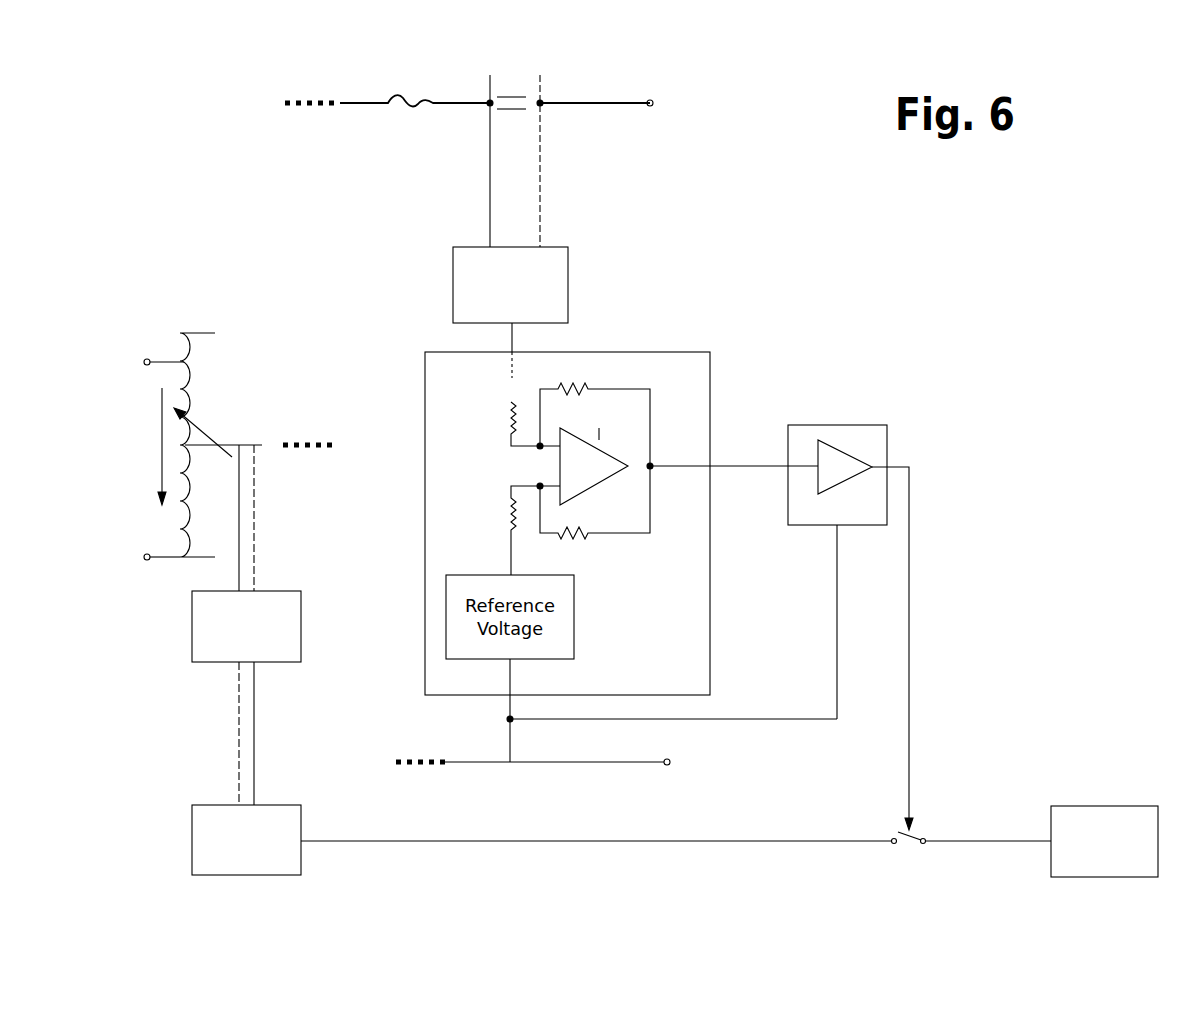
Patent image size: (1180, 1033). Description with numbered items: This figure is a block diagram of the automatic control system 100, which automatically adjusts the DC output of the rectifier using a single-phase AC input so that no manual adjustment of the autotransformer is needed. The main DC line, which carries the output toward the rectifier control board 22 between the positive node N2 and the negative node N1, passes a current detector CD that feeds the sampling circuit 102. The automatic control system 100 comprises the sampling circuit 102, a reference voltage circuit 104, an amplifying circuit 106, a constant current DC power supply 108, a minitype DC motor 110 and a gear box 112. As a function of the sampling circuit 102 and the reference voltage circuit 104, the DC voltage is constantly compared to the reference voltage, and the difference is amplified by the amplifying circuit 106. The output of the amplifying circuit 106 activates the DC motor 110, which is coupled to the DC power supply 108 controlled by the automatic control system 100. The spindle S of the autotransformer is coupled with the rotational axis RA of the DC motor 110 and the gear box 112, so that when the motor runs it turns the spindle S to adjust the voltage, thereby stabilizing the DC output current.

The rectifier control board line / current detector connection 22 is at (467, 133).
The automatic control system 100 is at (794, 273).
The sampling circuit 102 is at (549, 244).
The reference voltage circuit 104 is at (704, 376).
The amplifying circuit 106 is at (876, 425).
The constant current DC power supply 108 is at (1072, 820).
The DC motor 110 is at (288, 804).
The gear box 112 is at (288, 600).
The current detector CD is at (511, 112).
The spindle S is at (236, 443).
The rotational axis RA is at (247, 532).
The negative node N1 is at (678, 752).
The positive node N2 is at (660, 96).